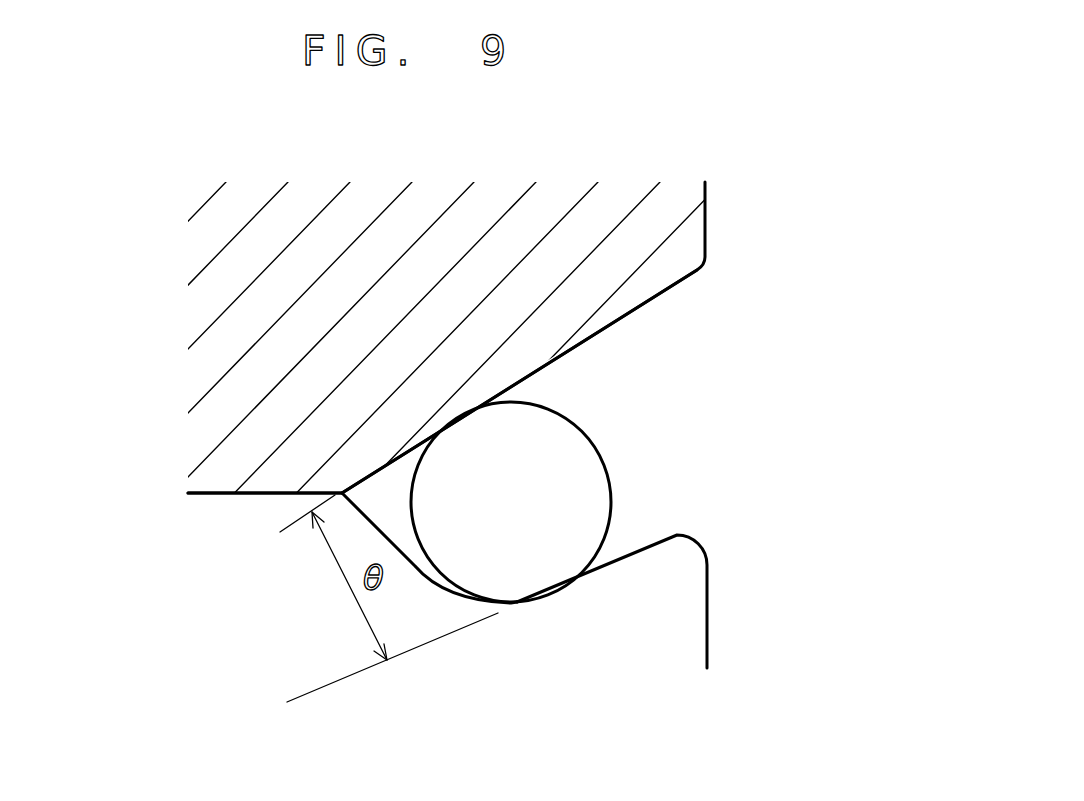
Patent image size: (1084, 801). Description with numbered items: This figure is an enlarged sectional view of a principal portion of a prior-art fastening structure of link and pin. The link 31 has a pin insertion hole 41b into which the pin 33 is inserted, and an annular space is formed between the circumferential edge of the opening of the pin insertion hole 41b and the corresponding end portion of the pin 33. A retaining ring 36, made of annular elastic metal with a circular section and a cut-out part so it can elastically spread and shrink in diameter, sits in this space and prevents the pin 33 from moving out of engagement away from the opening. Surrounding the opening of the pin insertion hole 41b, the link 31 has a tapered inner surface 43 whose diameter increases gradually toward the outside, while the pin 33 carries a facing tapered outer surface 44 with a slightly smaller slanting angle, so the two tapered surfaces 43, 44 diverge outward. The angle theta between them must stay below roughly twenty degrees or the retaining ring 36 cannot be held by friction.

The link 31 is at (653, 228).
The tapered inner surface 43 is at (642, 303).
The pin insertion hole 41b is at (247, 493).
The retaining ring 36 is at (590, 498).
The tapered outer surface 44 is at (606, 564).
The pin 33 is at (688, 618).